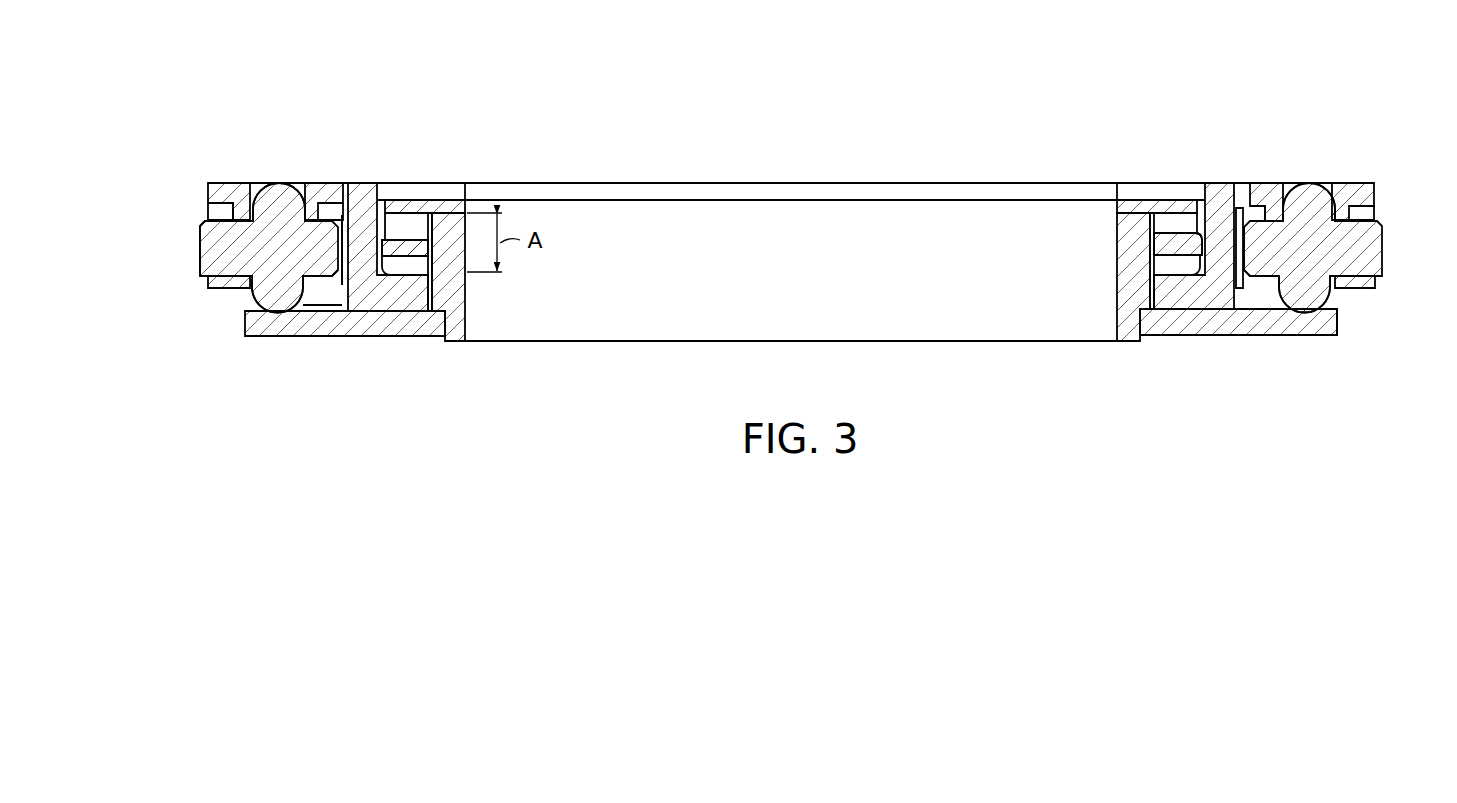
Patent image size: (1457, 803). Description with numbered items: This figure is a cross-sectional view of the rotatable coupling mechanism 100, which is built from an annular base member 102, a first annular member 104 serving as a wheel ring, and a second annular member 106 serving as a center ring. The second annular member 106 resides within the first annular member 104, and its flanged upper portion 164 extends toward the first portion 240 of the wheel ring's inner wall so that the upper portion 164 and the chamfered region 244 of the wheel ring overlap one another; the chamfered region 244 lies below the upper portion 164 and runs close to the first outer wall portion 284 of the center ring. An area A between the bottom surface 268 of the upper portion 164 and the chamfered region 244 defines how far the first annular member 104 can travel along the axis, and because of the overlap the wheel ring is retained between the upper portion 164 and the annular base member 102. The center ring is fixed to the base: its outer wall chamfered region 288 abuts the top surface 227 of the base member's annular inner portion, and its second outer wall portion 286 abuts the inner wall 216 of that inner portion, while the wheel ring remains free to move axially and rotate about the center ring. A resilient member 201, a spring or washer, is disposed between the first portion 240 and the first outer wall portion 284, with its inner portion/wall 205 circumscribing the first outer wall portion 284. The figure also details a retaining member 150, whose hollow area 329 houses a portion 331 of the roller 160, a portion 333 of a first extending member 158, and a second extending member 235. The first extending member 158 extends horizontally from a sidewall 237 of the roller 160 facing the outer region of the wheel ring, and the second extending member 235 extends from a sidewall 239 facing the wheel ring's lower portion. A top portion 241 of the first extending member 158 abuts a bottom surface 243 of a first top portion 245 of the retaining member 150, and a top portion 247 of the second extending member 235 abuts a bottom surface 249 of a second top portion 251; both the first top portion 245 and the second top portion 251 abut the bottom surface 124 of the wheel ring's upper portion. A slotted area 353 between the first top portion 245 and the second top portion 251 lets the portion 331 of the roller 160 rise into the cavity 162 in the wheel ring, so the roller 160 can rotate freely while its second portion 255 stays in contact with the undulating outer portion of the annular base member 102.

The rotatable coupling mechanism 100 is at (976, 62).
The annular base member 102 is at (1342, 334).
The first annular member 104 is at (1278, 197).
The second annular member 106 is at (1175, 200).
The bottom surface 124 is at (213, 199).
The retaining member 150 is at (1368, 282).
The first extending member 158 is at (220, 251).
The roller 160 is at (244, 299).
The cavity 162 is at (300, 190).
The upper portion 164 is at (425, 192).
The resilient member 201 is at (1200, 235).
The inner portion/wall 205 is at (1150, 245).
The inner wall 216 is at (447, 322).
The top surface 227 is at (350, 293).
The second extending member 235 is at (1268, 265).
The sidewall 237 is at (246, 300).
The sidewall 239 is at (306, 283).
The first portion 240 is at (380, 193).
The top portion 241 is at (1378, 215).
The bottom surface 243 is at (222, 223).
The chamfered region 244 is at (415, 263).
The first top portion 245 is at (228, 212).
The top portion 247 is at (1257, 215).
The bottom surface 249 is at (325, 221).
The second top portion 251 is at (345, 212).
The second portion 255 is at (1305, 300).
The bottom surface 268 is at (414, 219).
The first outer wall portion 284 is at (1167, 272).
The second outer wall portion 286 is at (1148, 325).
The outer wall chamfered region 288 is at (425, 314).
The hollow area 329 is at (1256, 282).
The portion 331 is at (1313, 196).
The portion 333 is at (220, 251).
The slotted area 353 is at (1283, 193).